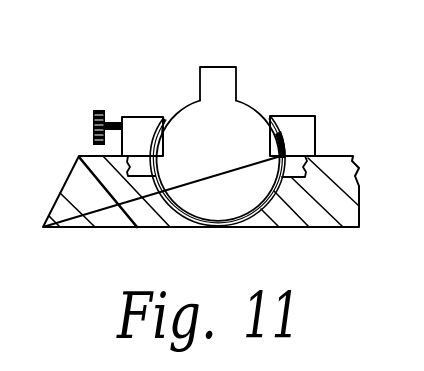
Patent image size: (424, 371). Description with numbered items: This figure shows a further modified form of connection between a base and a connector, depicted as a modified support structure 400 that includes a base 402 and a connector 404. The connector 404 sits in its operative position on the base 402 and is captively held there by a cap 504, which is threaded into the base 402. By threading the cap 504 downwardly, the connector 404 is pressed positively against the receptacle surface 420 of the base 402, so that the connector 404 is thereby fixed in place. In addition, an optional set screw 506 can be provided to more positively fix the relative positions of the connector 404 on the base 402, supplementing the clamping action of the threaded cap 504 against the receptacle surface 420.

The support structure 400 is at (257, 100).
The base 402 is at (107, 220).
The connector 404 is at (193, 117).
The receptacle surface 420 is at (172, 203).
The cap 504 is at (138, 128).
The set screw 506 is at (93, 118).